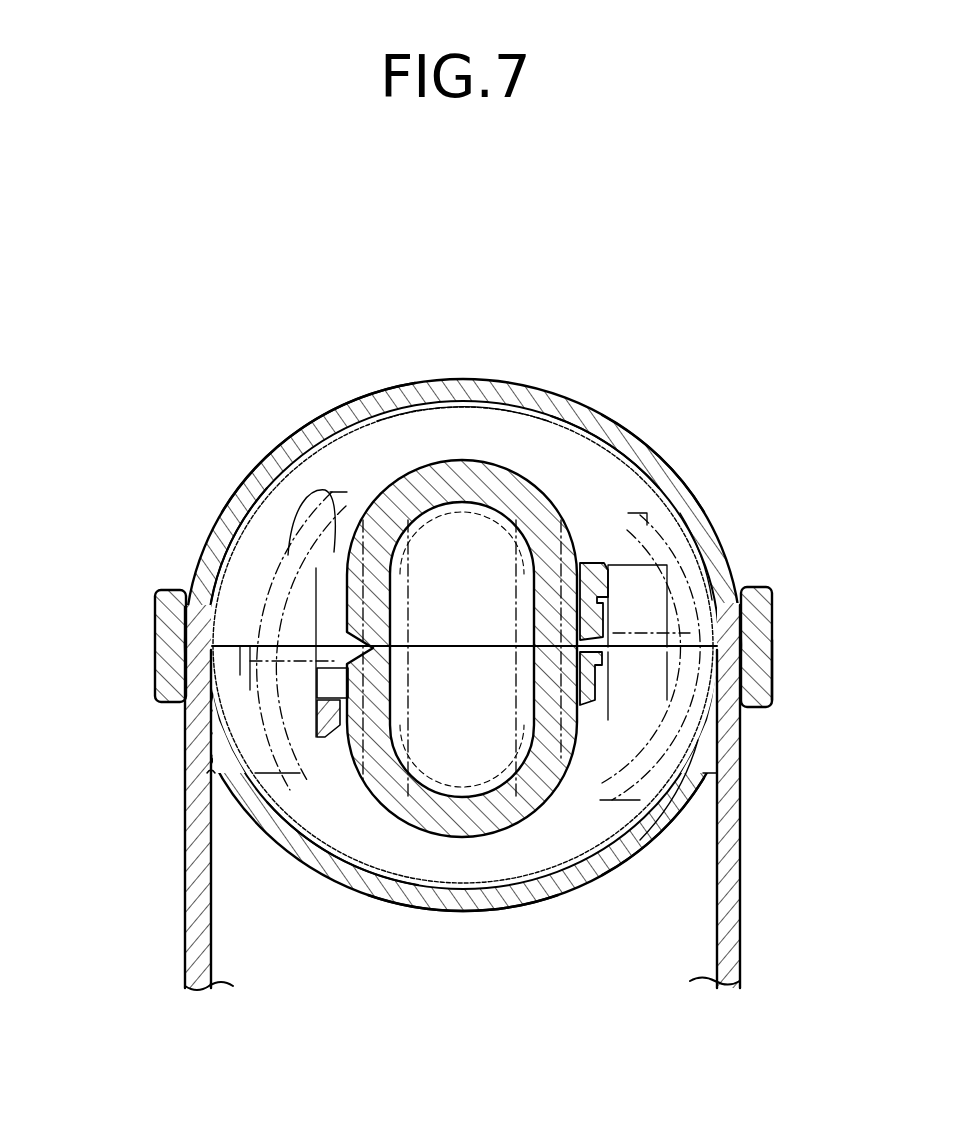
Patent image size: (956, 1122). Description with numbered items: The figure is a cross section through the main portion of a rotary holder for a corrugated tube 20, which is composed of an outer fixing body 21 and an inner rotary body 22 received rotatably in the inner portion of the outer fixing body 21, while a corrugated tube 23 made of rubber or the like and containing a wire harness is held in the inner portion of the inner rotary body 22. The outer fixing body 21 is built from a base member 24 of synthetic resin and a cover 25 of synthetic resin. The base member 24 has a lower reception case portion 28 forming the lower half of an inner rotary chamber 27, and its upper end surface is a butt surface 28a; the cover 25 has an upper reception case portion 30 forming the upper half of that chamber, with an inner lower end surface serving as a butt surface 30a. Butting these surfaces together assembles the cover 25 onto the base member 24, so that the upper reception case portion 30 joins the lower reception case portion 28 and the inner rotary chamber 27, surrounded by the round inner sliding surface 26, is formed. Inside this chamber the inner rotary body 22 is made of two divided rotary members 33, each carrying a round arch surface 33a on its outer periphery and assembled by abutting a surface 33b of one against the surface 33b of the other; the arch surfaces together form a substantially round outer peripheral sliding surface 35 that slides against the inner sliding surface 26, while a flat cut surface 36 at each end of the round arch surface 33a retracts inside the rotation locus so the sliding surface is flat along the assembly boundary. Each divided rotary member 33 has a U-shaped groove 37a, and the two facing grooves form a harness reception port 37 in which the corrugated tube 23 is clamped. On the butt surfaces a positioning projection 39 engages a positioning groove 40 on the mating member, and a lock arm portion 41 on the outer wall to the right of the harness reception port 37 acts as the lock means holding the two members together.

The rotary holder for a corrugated tube 20 is at (157, 403).
The outer fixing body 21 is at (227, 497).
The inner rotary body 22 is at (667, 478).
The corrugated tube 23 is at (445, 910).
The base member 24 is at (186, 878).
The cover 25 is at (225, 528).
The inner sliding surface 26 is at (458, 420).
The inner rotary chamber 27 is at (352, 850).
The lower reception case portion 28 is at (630, 848).
The butt surface 28a is at (165, 596).
The upper reception case portion 30 is at (633, 443).
The butt surface 30a is at (770, 603).
The divided rotary member 33 is at (710, 508).
The round arch surface 33a is at (555, 413).
The abutting surface 33b is at (262, 540).
The outer peripheral sliding surface 35 is at (352, 423).
The cut surface 36 is at (775, 652).
The harness reception port 37 is at (397, 723).
The U-shaped groove 37a is at (405, 540).
The positioning projection 39 is at (730, 558).
The positioning groove 40 is at (604, 675).
The lock arm portion 41 is at (598, 560).